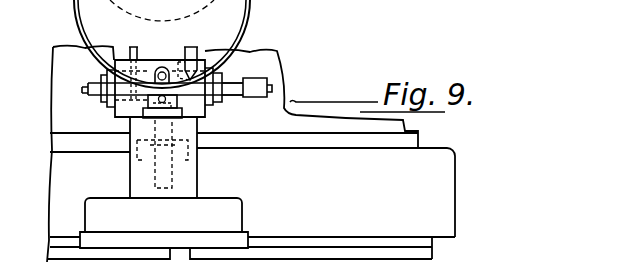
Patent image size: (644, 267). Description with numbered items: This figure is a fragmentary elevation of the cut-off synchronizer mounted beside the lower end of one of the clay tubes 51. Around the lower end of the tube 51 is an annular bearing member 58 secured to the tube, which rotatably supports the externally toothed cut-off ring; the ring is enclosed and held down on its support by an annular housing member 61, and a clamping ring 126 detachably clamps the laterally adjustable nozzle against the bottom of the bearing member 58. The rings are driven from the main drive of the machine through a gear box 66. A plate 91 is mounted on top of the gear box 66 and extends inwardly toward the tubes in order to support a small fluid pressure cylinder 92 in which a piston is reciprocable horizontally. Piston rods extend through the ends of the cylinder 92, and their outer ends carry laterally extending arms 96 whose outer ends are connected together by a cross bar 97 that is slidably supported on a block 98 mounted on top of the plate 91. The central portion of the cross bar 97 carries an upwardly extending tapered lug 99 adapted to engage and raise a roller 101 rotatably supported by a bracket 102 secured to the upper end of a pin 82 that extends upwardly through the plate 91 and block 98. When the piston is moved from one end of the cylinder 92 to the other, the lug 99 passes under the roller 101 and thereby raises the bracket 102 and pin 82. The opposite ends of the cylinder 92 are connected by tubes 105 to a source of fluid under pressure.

The tube 51 is at (58, 50).
The tubes 105 is at (132, 48).
The roller 101 is at (160, 68).
The tapered lug 99 is at (175, 62).
The fluid pressure cylinder 92 is at (212, 73).
The cross bar 97 is at (235, 84).
The arms 96 is at (90, 83).
The bracket 102 is at (180, 100).
The block 98 is at (184, 116).
The plate 91 is at (130, 128).
The pin 82 is at (202, 135).
The gear box 66 is at (213, 200).
The annular housing member 61 is at (447, 173).
The annular bearing member 58 is at (432, 238).
The clamping ring 126 is at (432, 248).